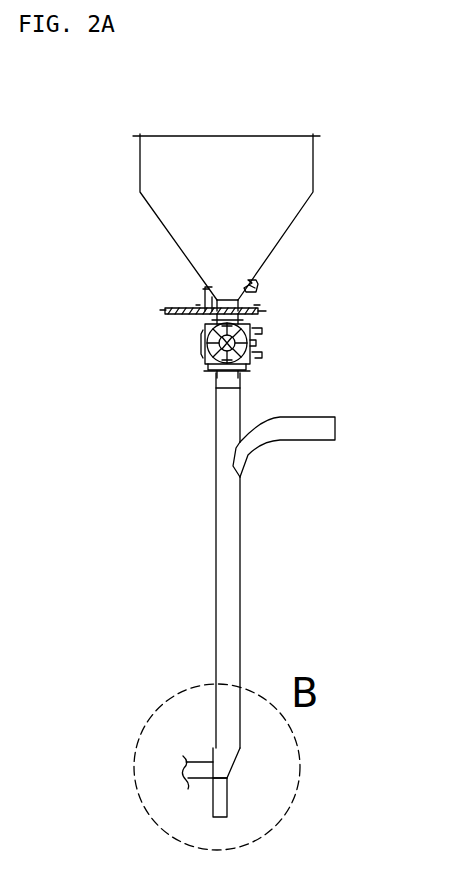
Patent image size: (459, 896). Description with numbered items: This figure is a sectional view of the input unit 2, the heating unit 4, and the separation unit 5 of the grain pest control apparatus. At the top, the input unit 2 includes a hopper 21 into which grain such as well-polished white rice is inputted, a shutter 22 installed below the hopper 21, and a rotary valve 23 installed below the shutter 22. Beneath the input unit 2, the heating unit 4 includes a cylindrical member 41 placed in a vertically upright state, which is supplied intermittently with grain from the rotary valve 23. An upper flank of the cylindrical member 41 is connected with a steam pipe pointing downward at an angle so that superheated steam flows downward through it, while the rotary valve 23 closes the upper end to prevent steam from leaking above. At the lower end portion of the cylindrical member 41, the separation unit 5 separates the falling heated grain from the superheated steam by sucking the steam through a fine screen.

The input unit 2 is at (108, 183).
The hopper 21 is at (300, 184).
The shutter 22 is at (165, 311).
The rotary valve 23 is at (258, 348).
The heating unit 4 is at (115, 483).
The cylindrical member 41 is at (225, 546).
The separation unit 5 is at (173, 727).